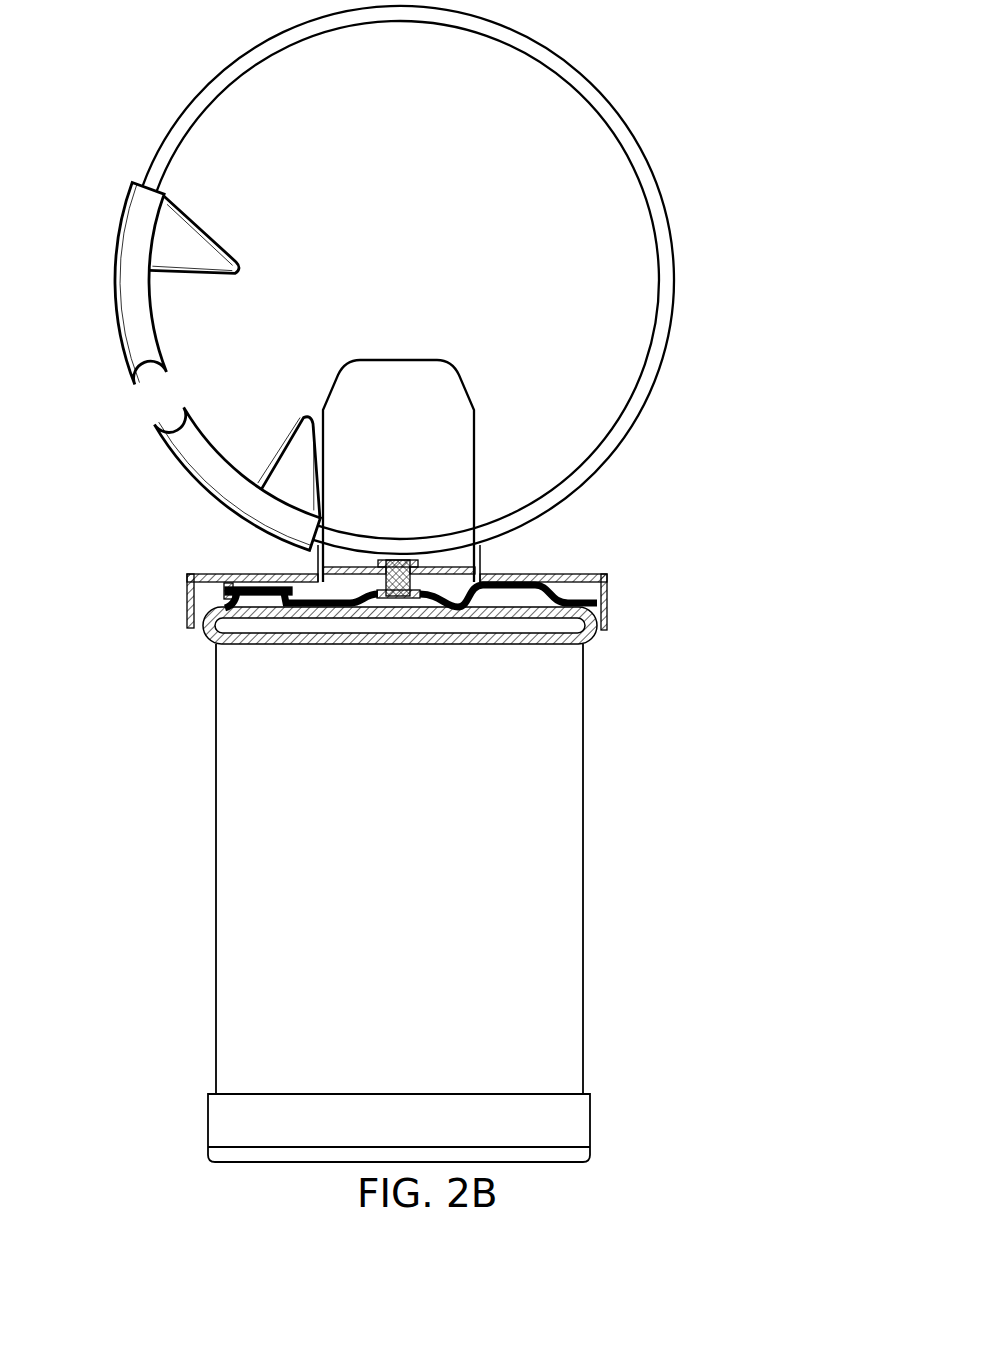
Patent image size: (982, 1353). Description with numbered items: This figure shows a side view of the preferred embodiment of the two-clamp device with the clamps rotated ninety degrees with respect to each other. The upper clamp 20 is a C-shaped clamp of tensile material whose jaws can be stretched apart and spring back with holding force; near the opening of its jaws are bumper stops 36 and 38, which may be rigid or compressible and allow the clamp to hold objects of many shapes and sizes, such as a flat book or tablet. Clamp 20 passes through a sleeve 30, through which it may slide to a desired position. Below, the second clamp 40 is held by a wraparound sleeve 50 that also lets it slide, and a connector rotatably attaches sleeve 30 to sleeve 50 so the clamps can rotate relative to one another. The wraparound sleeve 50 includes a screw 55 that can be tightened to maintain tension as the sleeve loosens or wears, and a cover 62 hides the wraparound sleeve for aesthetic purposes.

The C-shaped clamp 20 is at (674, 280).
The bumper stop 36 is at (177, 268).
The bumper stop 38 is at (283, 437).
The sleeve 30 is at (415, 360).
The cover 62 is at (607, 582).
The screw 55 is at (255, 574).
The wraparound sleeve 50 is at (605, 625).
The C-shaped clamp 40 is at (583, 795).